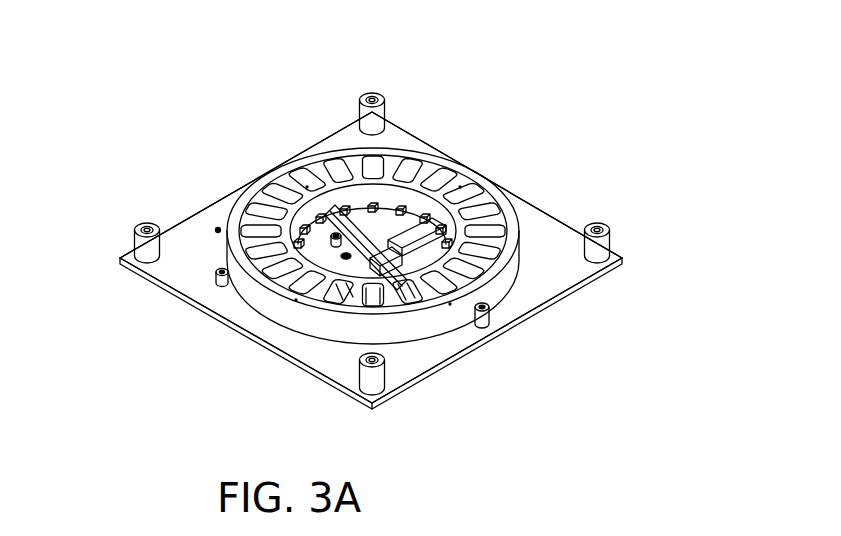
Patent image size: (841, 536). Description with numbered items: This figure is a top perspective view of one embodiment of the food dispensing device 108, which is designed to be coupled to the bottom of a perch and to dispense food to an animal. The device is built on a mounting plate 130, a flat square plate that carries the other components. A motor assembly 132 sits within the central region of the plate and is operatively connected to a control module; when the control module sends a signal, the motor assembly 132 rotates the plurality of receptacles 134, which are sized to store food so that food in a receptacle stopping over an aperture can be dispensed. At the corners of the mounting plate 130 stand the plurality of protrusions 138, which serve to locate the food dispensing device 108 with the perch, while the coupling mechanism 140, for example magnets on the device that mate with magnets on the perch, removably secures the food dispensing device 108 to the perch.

The food dispensing device 108 is at (651, 66).
The mounting plate 130 is at (523, 197).
The motor assembly 132 is at (387, 260).
The plurality of receptacles 134 is at (307, 187).
The plurality of protrusions 138 is at (382, 93).
The coupling mechanism 140 is at (216, 269).